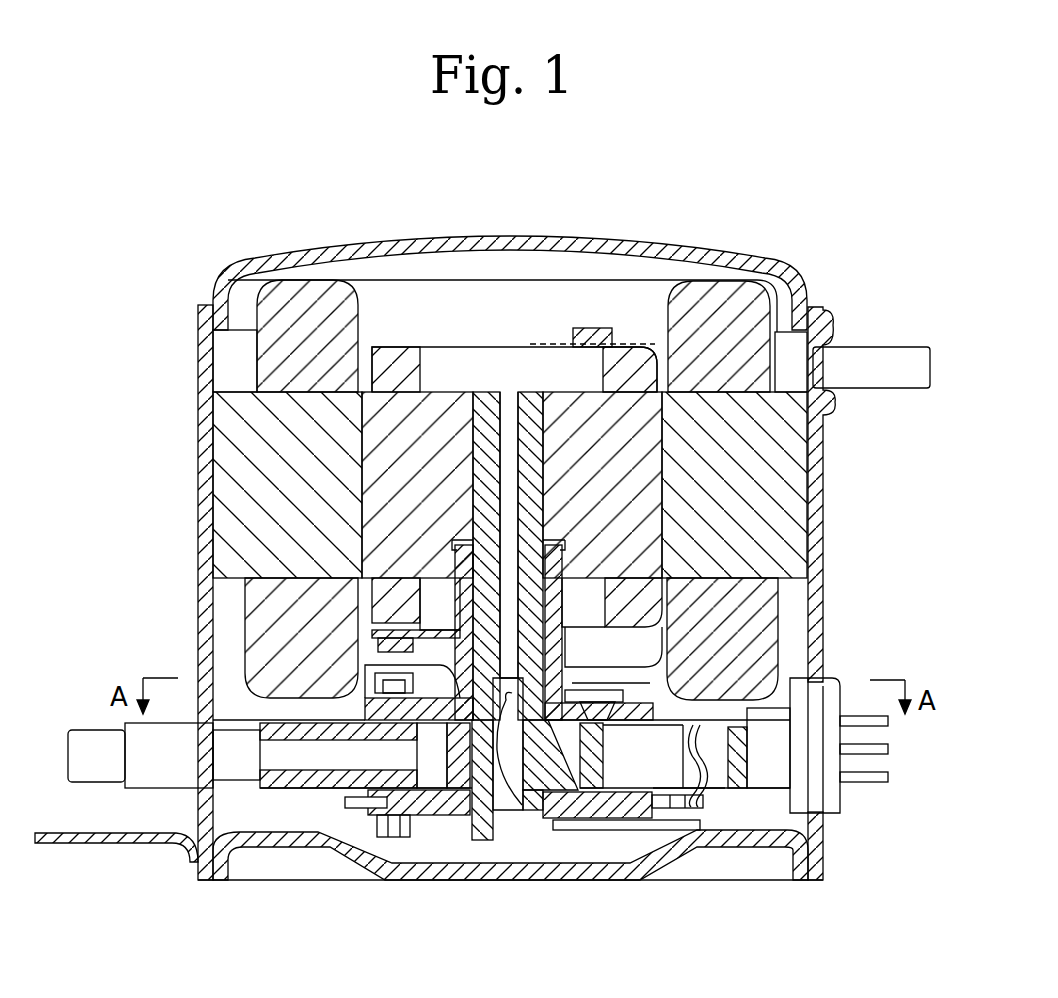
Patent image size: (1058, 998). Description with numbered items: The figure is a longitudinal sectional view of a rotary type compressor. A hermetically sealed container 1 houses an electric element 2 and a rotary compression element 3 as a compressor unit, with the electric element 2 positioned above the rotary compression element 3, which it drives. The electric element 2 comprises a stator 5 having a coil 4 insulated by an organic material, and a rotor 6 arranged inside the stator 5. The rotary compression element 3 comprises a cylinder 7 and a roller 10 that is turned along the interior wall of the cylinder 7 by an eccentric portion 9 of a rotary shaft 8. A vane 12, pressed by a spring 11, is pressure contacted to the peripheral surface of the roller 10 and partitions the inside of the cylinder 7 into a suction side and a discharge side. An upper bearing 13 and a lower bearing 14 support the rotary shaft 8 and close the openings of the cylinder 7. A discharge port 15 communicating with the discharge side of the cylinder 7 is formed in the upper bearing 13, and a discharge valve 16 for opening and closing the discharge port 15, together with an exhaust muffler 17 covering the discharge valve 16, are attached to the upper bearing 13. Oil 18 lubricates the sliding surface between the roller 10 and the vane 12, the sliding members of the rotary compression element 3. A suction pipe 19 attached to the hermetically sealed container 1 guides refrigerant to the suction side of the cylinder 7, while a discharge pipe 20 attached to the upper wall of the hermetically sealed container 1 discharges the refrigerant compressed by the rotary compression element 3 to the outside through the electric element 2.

The hermetically sealed container 1 is at (203, 368).
The electric element 2 is at (760, 450).
The rotary compression element 3 is at (290, 785).
The coil 4 is at (752, 292).
The stator 5 is at (245, 445).
The rotor 6 is at (375, 517).
The cylinder 7 is at (336, 792).
The rotary shaft 8 is at (530, 520).
The eccentric portion 9 is at (568, 765).
The roller 10 is at (598, 792).
The spring 11 is at (703, 792).
The vane 12 is at (660, 767).
The upper bearing 13 is at (365, 712).
The lower bearing 14 is at (440, 800).
The discharge port 15 is at (747, 757).
The discharge valve 16 is at (608, 688).
The exhaust muffler 17 is at (660, 637).
The oil 18 is at (790, 800).
The suction pipe 19 is at (98, 763).
The discharge pipe 20 is at (870, 362).